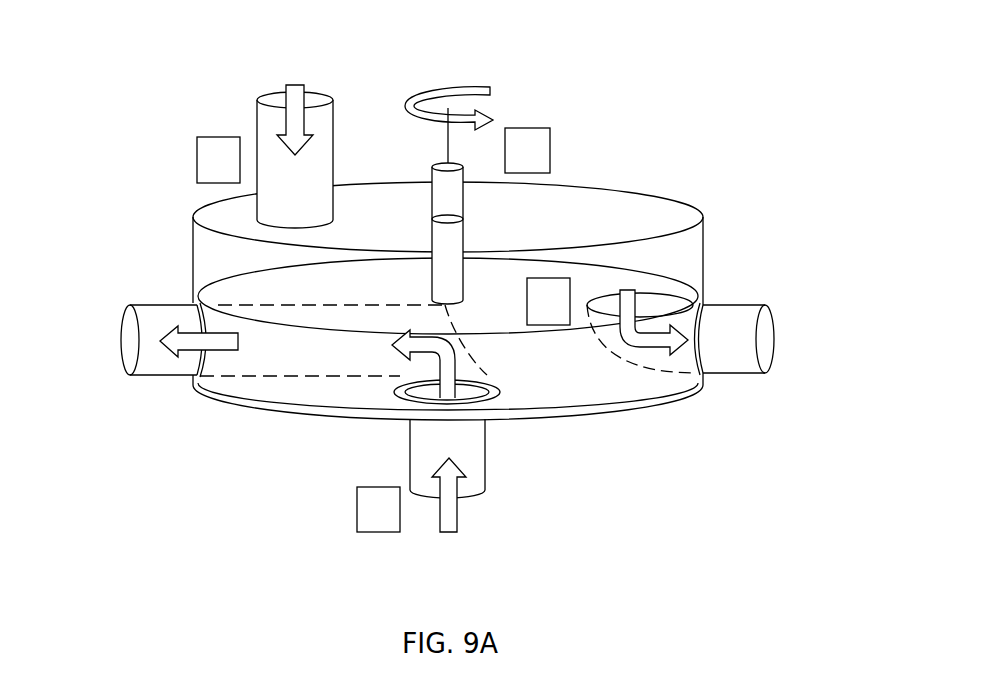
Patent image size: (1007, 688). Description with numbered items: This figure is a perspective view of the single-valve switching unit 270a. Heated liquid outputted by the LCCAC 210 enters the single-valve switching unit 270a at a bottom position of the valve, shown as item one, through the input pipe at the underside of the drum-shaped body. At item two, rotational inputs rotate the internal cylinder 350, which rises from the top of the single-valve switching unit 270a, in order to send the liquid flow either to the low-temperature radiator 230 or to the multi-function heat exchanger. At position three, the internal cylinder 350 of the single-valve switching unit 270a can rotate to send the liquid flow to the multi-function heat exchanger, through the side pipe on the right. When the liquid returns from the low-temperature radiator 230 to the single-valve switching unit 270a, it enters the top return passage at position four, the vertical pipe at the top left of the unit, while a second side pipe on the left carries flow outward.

The single-valve switching unit 270a is at (636, 63).
The low-temperature radiator 230 is at (310, 77).
The internal cylinder 350 is at (431, 196).
The LCCAC 210 is at (503, 591).